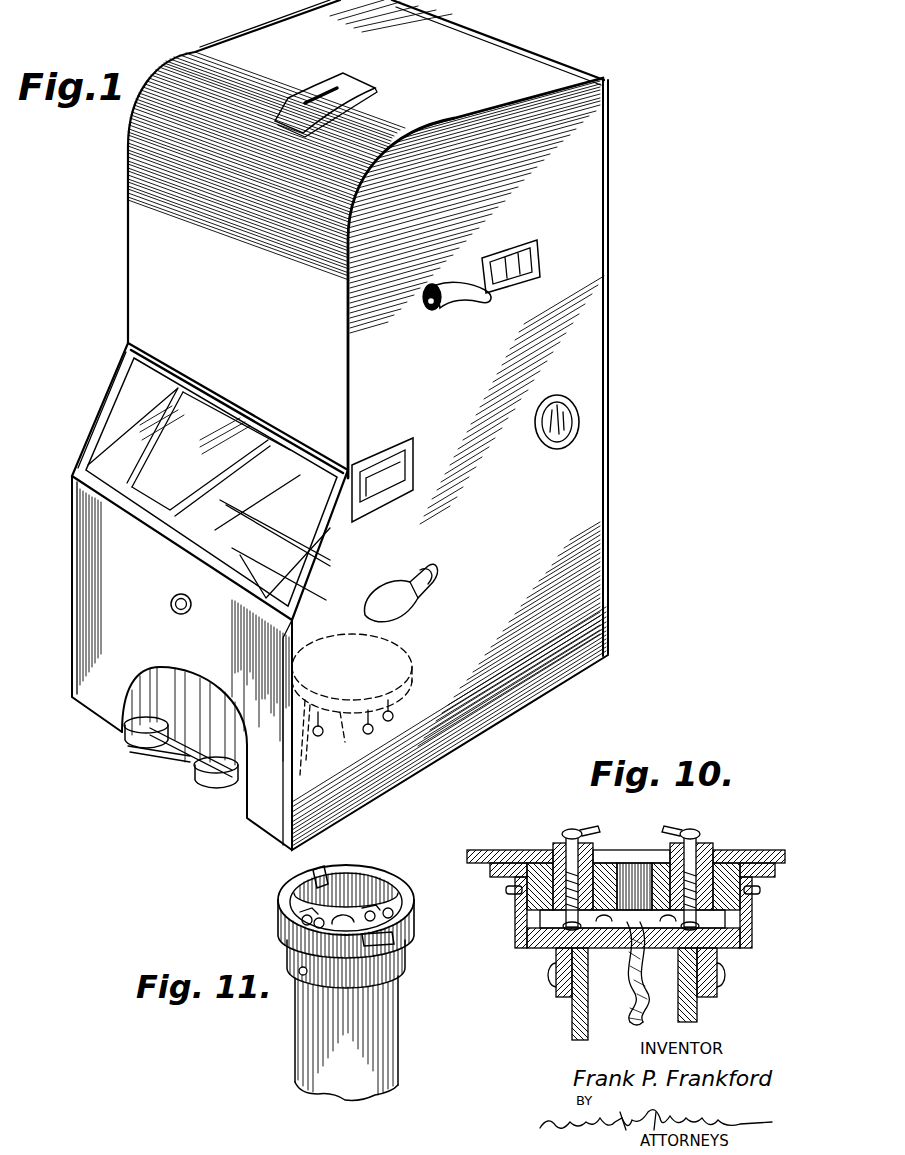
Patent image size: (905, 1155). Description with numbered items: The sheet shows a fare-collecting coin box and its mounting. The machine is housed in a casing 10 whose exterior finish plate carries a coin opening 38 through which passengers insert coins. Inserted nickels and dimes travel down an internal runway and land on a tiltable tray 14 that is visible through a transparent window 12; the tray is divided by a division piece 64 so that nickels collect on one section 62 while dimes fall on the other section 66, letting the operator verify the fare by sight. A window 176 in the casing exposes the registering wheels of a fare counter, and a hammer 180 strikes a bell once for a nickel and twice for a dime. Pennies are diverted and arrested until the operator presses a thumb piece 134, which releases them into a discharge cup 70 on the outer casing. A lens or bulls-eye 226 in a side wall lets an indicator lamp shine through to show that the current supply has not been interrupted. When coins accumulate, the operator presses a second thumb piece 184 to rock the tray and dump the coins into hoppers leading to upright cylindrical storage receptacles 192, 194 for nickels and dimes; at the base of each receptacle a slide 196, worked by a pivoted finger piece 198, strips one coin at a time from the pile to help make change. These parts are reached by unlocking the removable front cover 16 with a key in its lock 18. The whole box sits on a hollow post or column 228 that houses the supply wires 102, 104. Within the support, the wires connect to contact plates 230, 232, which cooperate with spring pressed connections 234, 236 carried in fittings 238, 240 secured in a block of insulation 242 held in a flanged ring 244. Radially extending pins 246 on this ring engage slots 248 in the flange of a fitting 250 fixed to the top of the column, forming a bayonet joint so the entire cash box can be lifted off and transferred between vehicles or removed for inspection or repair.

In FIG. 1, the casing 10 is at (237, 46).
In FIG. 1, the coin opening 38 is at (318, 92).
In FIG. 1, the thumb piece 134 is at (457, 288).
In FIG. 1, the window 176 is at (536, 252).
In FIG. 1, the hammer 180 is at (512, 265).
In FIG. 1, the transparent window 12 is at (163, 383).
In FIG. 1, the tiltable tray 14 is at (182, 398).
In FIG. 1, the section 62 is at (211, 454).
In FIG. 1, the division piece 64 is at (226, 470).
In FIG. 1, the section 66 is at (281, 564).
In FIG. 1, the discharge cup 70 is at (390, 495).
In FIG. 1, the lens or bulls-eye 226 is at (553, 440).
In FIG. 1, the thumb piece 184 is at (375, 598).
In FIG. 1, the removable front cover 16 is at (182, 663).
In FIG. 1, the lock 18 is at (180, 616).
In FIG. 1, the nickel coin storage receptacle 192 is at (130, 741).
In FIG. 1, the slide 196 is at (146, 752).
In FIG. 1, the finger piece 198 is at (160, 735).
In FIG. 1, the dime coin storage receptacle 194 is at (206, 781).
In FIG. 1, the radially extending pins 246 is at (384, 700).
In FIG. 10, the radially extending pins 246 is at (760, 894).
In FIG. 1, the spring pressed connection 236 is at (372, 727).
In FIG. 10, the spring pressed connection 236 is at (700, 919).
In FIG. 1, the flanged ring 244 is at (343, 744).
In FIG. 10, the flanged ring 244 is at (496, 866).
In FIG. 1, the spring pressed connection 234 is at (308, 774).
In FIG. 10, the spring pressed connection 234 is at (540, 947).
In FIG. 11, the fitting 250 is at (282, 940).
In FIG. 10, the fitting 250 is at (515, 935).
In FIG. 11, the contact plate 232 is at (384, 903).
In FIG. 10, the contact plate 232 is at (722, 955).
In FIG. 11, the contact plate 230 is at (300, 920).
In FIG. 10, the contact plate 230 is at (558, 951).
In FIG. 11, the slots 248 is at (394, 950).
In FIG. 11, the post or column 228 is at (398, 1036).
In FIG. 10, the post or column 228 is at (572, 1016).
In FIG. 10, the block of insulation 242 is at (518, 860).
In FIG. 10, the fitting 238 is at (556, 862).
In FIG. 10, the fitting 240 is at (738, 858).
In FIG. 10, the supply wire 102 is at (648, 1012).
In FIG. 10, the supply wire 104 is at (628, 1010).